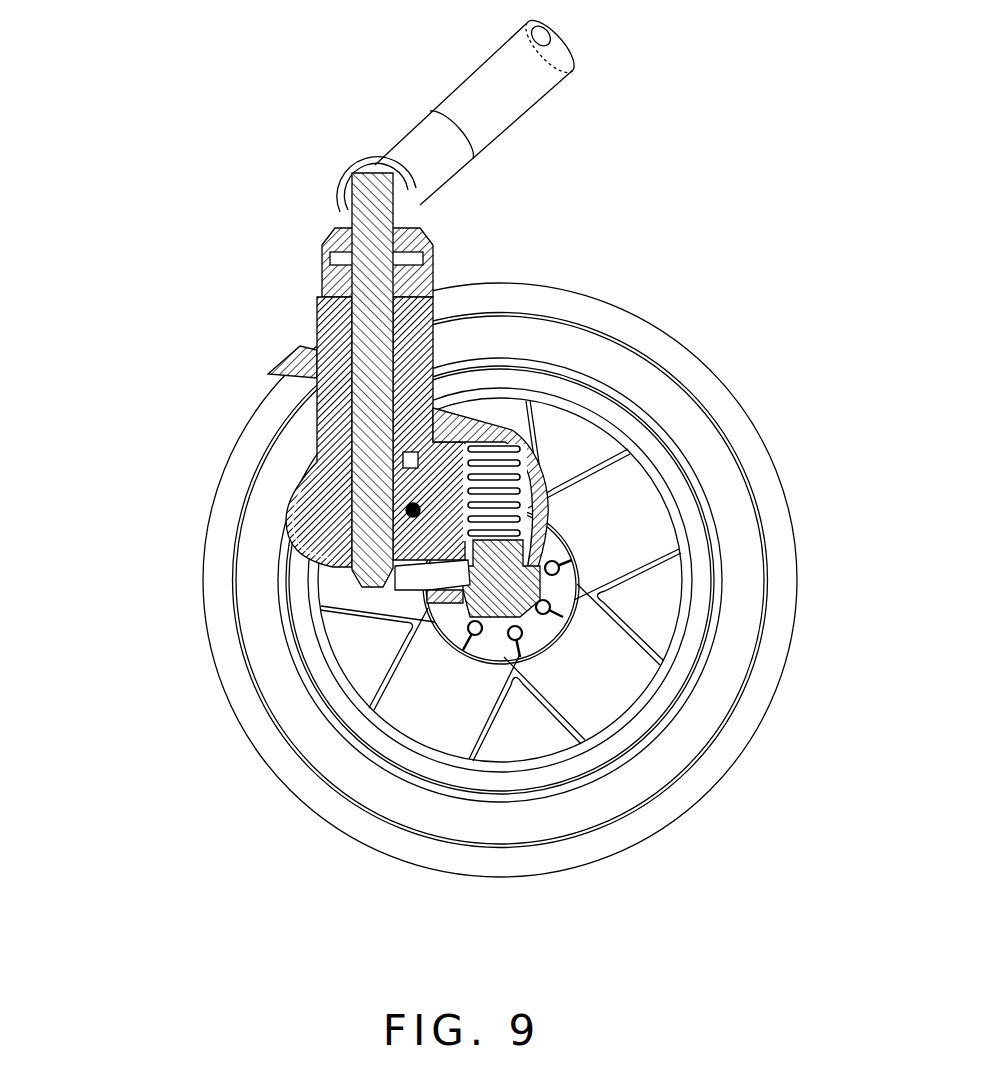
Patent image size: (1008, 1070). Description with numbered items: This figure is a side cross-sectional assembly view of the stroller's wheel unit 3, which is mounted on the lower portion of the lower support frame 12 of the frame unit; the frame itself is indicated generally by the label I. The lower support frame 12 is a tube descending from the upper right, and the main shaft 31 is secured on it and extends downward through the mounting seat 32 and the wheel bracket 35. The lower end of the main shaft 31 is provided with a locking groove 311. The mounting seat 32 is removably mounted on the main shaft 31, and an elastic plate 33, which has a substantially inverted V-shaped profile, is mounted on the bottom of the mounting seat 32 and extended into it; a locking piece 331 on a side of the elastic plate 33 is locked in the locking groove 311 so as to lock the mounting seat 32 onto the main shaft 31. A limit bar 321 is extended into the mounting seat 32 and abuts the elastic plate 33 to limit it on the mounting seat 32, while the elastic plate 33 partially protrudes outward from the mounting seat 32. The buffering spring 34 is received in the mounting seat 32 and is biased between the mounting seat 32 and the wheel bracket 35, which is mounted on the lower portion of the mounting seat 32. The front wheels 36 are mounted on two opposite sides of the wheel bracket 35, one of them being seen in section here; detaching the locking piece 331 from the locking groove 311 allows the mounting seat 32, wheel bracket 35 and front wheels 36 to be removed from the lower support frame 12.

The stroller frame I is at (350, 68).
The lower support frame 12 is at (466, 95).
The wheel unit 3 is at (458, 410).
The main shaft 31 is at (372, 197).
The locking groove 311 is at (292, 530).
The mounting seat 32 is at (463, 405).
The limit bar 321 is at (406, 508).
The elastic plate 33 is at (392, 588).
The locking piece 331 is at (390, 602).
The buffering spring 34 is at (515, 448).
The wheel bracket 35 is at (572, 462).
The front wheels 36 is at (292, 782).